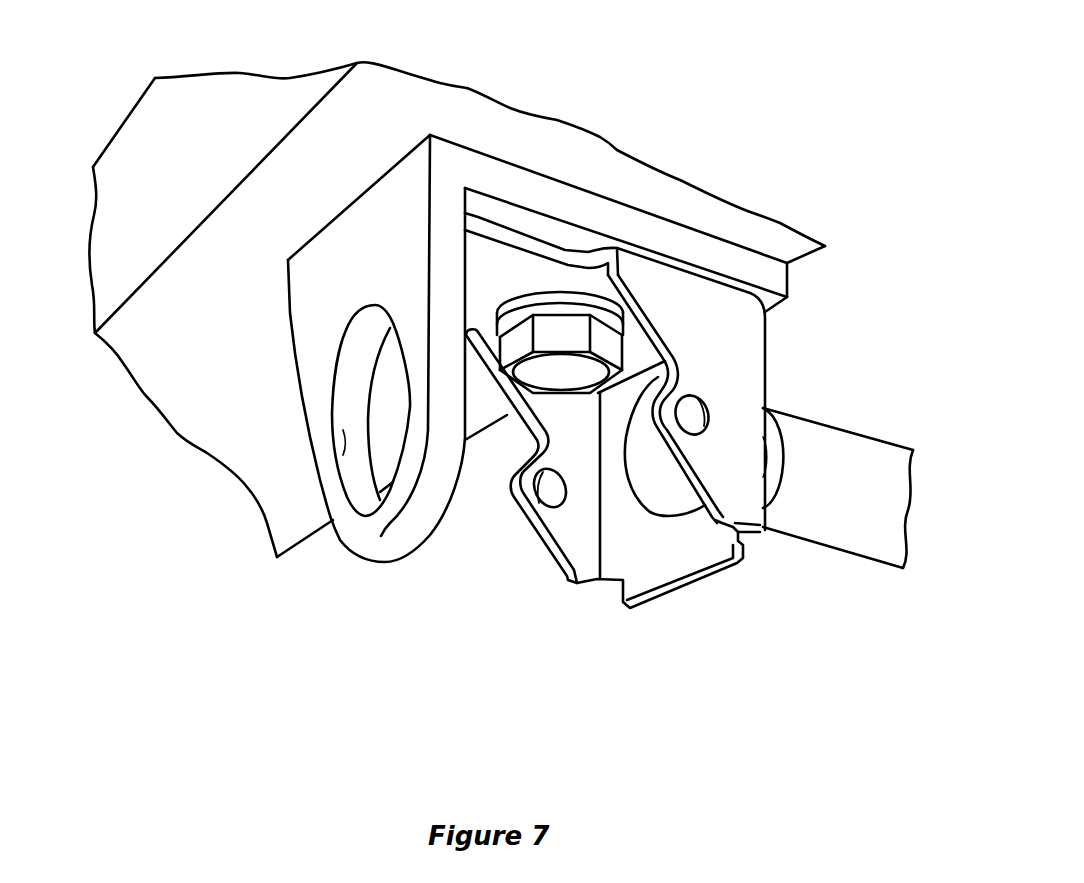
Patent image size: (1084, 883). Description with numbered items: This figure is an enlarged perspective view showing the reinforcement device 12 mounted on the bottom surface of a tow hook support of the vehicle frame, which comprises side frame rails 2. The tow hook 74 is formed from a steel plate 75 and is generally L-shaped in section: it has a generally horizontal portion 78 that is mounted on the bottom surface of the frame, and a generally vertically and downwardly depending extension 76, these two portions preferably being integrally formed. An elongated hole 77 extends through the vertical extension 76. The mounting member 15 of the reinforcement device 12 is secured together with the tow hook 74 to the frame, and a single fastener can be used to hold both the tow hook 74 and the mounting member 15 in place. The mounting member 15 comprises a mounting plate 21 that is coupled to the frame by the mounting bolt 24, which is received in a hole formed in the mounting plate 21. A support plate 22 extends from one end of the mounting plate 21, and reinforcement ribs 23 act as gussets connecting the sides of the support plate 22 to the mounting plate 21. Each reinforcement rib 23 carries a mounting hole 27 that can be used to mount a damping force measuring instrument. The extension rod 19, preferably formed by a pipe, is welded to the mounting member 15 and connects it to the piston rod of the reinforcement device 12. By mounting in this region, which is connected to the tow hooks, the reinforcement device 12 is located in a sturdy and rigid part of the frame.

The side frame rail 2 is at (428, 102).
The reinforcement device 12 is at (836, 427).
The mounting member 15 is at (765, 337).
The extension rod 19 is at (877, 467).
The mounting plate 21 is at (503, 267).
The support plate 22 is at (650, 583).
The reinforcement rib 23 is at (728, 477).
The mounting bolt 24 is at (552, 370).
The mounting hole 27 is at (706, 403).
The tow hook 74 is at (371, 530).
The steel plate 75 is at (288, 322).
The vertical portion 76 is at (313, 357).
The elongated hole 77 is at (343, 437).
The horizontal portion 78 is at (602, 218).